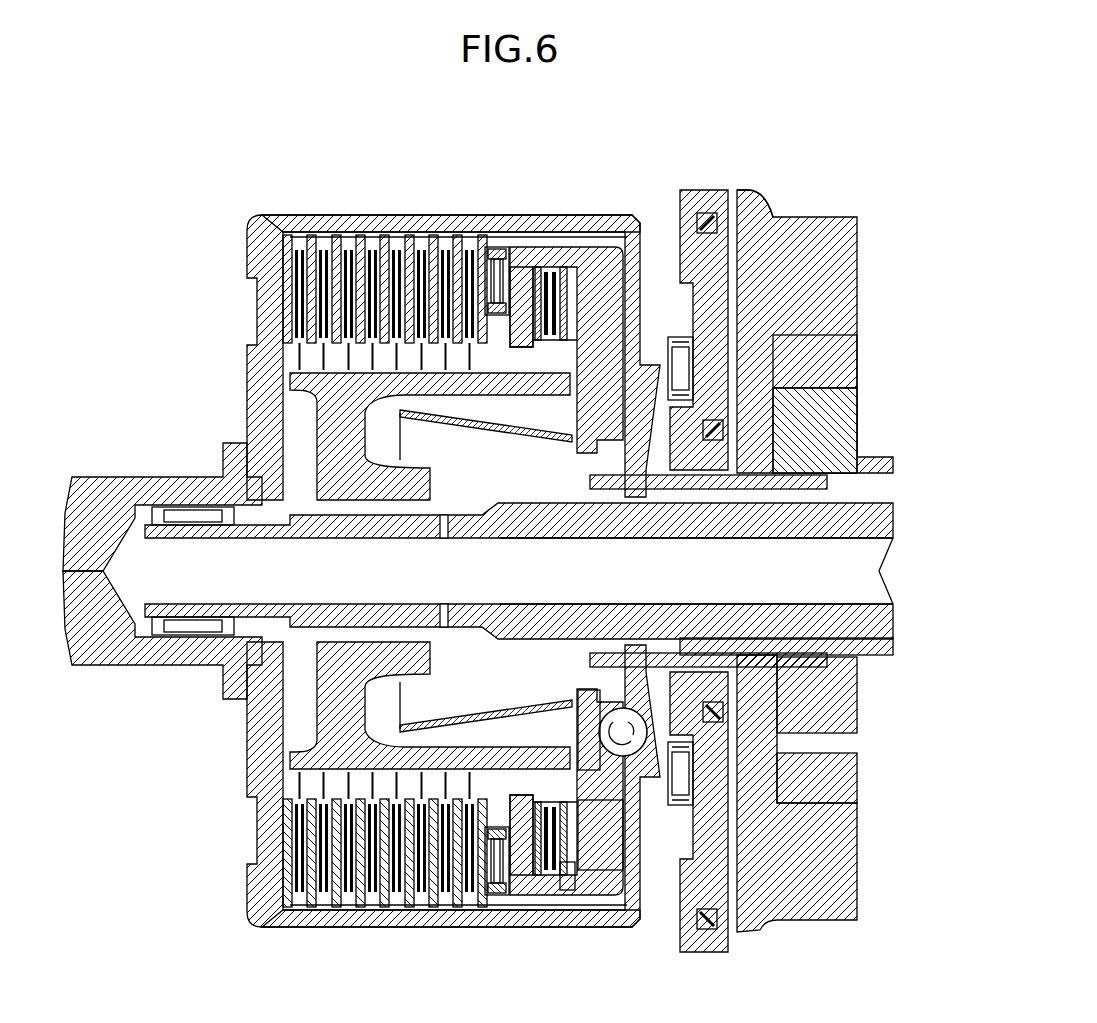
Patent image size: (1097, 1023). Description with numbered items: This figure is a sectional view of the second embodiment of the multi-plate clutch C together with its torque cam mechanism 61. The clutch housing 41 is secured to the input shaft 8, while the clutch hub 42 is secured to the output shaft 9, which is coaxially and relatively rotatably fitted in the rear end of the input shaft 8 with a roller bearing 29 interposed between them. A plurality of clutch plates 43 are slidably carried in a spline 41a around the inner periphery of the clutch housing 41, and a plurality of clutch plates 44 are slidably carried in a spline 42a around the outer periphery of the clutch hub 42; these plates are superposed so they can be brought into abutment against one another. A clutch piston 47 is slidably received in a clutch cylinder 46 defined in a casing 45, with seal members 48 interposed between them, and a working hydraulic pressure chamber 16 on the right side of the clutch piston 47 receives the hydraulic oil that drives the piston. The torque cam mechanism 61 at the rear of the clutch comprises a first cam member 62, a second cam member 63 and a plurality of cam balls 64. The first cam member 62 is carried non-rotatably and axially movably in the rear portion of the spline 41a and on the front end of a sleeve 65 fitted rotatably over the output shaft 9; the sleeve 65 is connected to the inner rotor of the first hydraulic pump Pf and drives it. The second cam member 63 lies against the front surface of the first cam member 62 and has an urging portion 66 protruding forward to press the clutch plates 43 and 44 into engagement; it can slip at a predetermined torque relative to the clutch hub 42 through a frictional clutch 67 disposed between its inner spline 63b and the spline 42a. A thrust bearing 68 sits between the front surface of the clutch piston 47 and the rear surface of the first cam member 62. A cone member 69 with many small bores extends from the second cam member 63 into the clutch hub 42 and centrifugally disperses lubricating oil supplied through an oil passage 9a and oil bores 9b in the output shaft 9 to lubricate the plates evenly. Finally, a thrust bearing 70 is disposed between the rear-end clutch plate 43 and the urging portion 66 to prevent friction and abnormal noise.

The input shaft 8 is at (150, 479).
The output shaft 9 is at (816, 639).
The oil passage 9a is at (690, 540).
The oil bores 9b is at (444, 612).
The working hydraulic pressure chamber 16 is at (737, 827).
The roller bearing 29 is at (195, 505).
The clutch housing 41 is at (243, 349).
The spline 41a is at (447, 236).
The clutch hub 42 is at (437, 489).
The spline 42a is at (535, 364).
The clutch plates 43 is at (386, 238).
The clutch plates 44 is at (465, 368).
The casing 45 is at (795, 232).
The clutch cylinder 46 is at (745, 205).
The clutch piston 47 is at (677, 243).
The seal members 48 is at (712, 700).
The torque cam mechanism 61 is at (590, 781).
The first cam member 62 is at (647, 798).
The second cam member 63 is at (583, 880).
The spline 63b is at (577, 873).
The cam balls 64 is at (600, 705).
The sleeve 65 is at (762, 473).
The urging portion 66 is at (548, 262).
The frictional clutch 67 is at (556, 880).
The thrust bearing 68 is at (680, 306).
The cone member 69 is at (434, 722).
The thrust bearing 70 is at (500, 873).
The multi-plate clutch C is at (524, 217).
The first hydraulic pump Pf is at (860, 389).